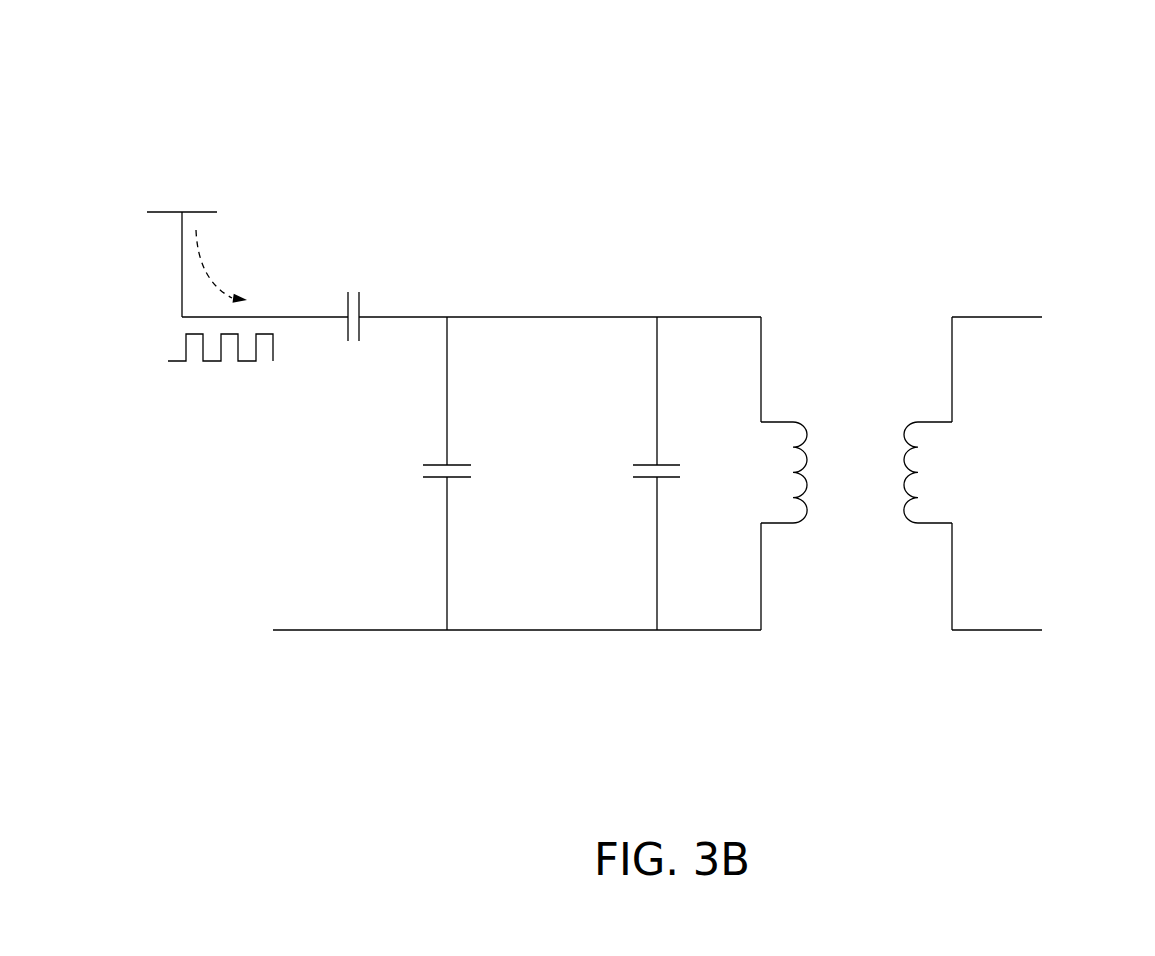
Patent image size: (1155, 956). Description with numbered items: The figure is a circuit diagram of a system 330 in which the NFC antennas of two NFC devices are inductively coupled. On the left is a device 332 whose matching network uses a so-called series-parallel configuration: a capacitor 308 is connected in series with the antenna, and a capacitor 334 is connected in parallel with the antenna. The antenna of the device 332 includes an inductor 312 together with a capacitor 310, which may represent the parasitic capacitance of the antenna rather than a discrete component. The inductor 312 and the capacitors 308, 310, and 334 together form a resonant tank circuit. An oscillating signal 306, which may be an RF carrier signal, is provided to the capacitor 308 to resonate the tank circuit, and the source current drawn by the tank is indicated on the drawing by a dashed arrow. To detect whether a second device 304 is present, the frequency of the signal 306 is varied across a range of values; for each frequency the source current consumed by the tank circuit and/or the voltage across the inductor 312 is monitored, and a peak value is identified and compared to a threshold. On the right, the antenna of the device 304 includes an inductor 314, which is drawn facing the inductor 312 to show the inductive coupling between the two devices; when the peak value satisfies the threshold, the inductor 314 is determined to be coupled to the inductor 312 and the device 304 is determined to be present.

The NFC device 304 is at (1019, 202).
The oscillating signal 306 is at (170, 361).
The capacitor 308 is at (348, 302).
The capacitor 310 is at (643, 463).
The inductor 312 is at (777, 421).
The inductor 314 is at (942, 421).
The system 330 is at (799, 82).
The device 332 is at (572, 202).
The capacitor 334 is at (432, 463).